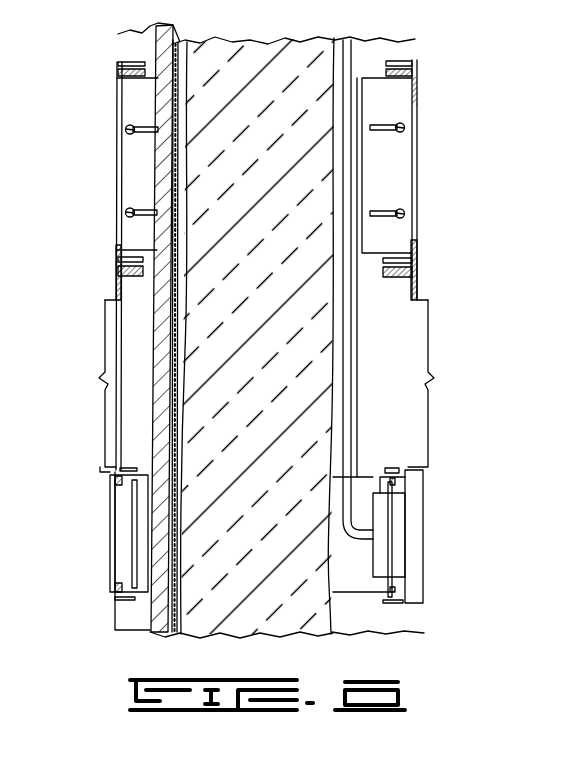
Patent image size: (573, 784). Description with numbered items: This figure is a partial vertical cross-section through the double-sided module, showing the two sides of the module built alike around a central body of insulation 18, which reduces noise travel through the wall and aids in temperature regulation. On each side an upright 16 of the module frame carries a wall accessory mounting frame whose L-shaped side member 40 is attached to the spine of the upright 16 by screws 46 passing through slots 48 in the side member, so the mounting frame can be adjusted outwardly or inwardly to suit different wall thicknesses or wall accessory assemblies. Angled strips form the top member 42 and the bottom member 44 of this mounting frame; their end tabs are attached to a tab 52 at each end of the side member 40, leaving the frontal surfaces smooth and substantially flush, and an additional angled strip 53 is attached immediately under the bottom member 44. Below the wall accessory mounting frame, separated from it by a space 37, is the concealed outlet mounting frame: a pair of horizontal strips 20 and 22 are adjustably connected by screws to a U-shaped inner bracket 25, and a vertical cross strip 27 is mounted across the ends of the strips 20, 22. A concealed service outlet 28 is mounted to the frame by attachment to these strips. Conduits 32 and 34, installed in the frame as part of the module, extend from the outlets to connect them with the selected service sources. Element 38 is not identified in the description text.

The upright 16 is at (388, 334).
The insulation 18 is at (290, 353).
The strip 20 is at (128, 467).
The strip 22 is at (128, 598).
The U-shaped inner bracket 25 is at (147, 525).
The vertical cross strip 27 is at (118, 539).
The concealed service outlet 28 is at (406, 528).
The conduit 32 is at (160, 106).
The conduit 34 is at (352, 438).
The space 37 is at (262, 383).
The mounting plate 38 is at (414, 64).
The L-shaped side member 40 is at (140, 185).
The top member 42 is at (118, 67).
The bottom member 44 is at (119, 259).
The screw 46 is at (128, 128).
The slot 48 is at (150, 130).
The tab 52 is at (137, 61).
The additional angled strip 53 is at (116, 293).